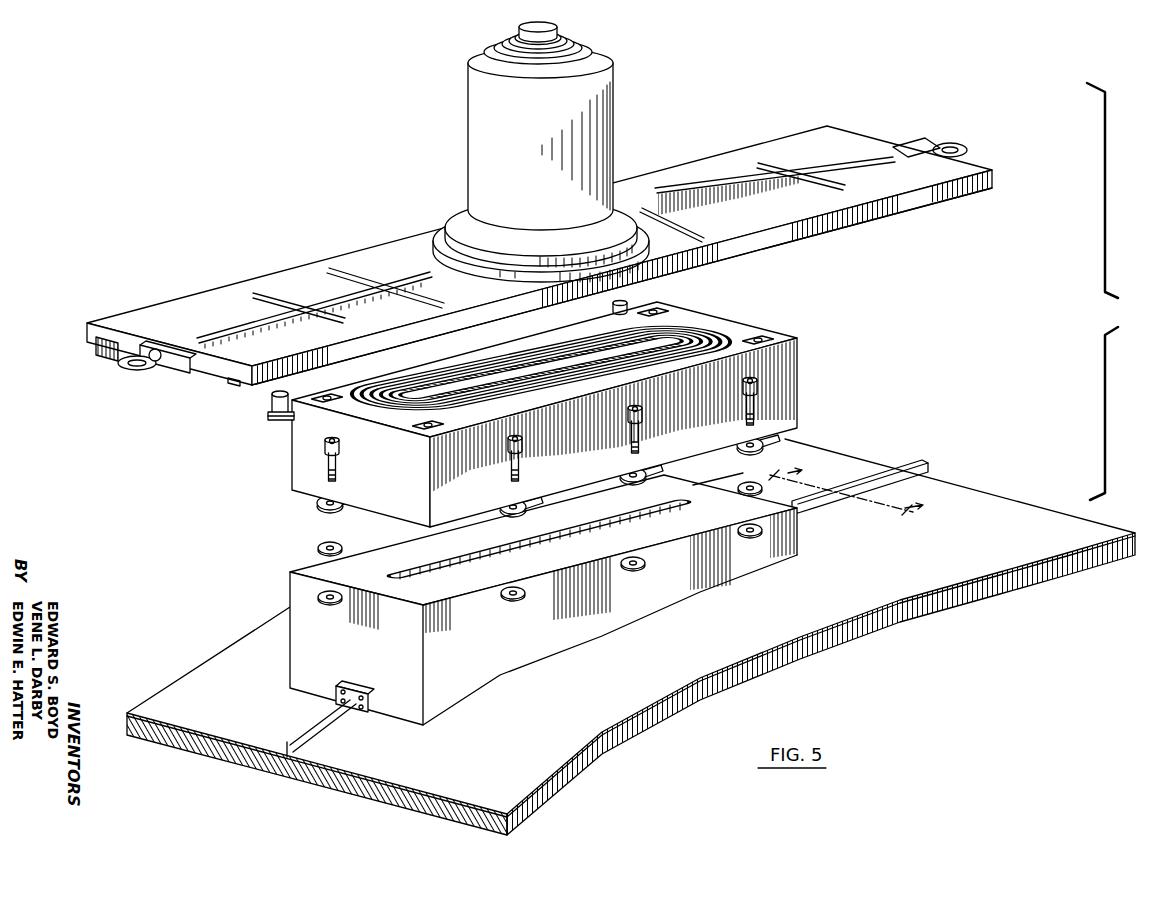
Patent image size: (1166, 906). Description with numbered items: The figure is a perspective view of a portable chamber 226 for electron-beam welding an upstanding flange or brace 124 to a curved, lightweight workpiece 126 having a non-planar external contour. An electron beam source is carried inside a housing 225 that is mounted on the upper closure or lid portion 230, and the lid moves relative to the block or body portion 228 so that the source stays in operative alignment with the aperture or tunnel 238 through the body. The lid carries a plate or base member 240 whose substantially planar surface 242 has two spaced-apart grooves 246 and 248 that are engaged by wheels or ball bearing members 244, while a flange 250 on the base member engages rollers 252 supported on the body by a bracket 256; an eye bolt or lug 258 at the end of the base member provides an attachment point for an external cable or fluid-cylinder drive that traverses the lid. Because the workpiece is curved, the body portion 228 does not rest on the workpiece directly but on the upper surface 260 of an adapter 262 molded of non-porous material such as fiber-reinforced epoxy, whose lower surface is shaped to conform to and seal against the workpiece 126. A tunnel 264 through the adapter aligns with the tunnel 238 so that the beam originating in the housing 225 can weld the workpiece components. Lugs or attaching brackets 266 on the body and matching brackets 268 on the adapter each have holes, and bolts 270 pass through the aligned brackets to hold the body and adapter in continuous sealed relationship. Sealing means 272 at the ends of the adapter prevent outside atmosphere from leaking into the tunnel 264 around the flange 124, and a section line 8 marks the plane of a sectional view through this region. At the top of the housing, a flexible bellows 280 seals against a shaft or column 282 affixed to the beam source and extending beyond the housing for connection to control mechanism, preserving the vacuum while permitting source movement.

The section line 8- 8 is at (819, 477).
The upstanding flange or brace 124 is at (921, 468).
The workpiece 126 is at (1013, 517).
The housing 225 is at (572, 133).
The portable chamber 226 is at (1123, 291).
The block or body portion 228 is at (782, 400).
The upper closure or lid portion 230 is at (740, 158).
The aperture or tunnel 238 is at (660, 335).
The plate or base member 240 is at (842, 215).
The substantially planar surface 242 is at (212, 376).
The wheels or ball bearing members 244 is at (323, 397).
The groove 246 is at (96, 358).
The groove 248 is at (235, 388).
The flange 250 is at (93, 346).
The roller 252 is at (635, 301).
The bracket 256 is at (285, 421).
The eye bolt or lug 258 is at (148, 371).
The upper surface of adapter 260 is at (660, 492).
The adapter 262 is at (766, 549).
The tunnel 264 is at (493, 557).
The lugs or attaching brackets 266 is at (323, 514).
The lugs or attaching brackets 268 is at (325, 605).
The bolts 270 is at (510, 462).
The sealing means 272 is at (360, 692).
The flexible bellows 280 is at (573, 50).
The shaft or column 282 is at (518, 31).